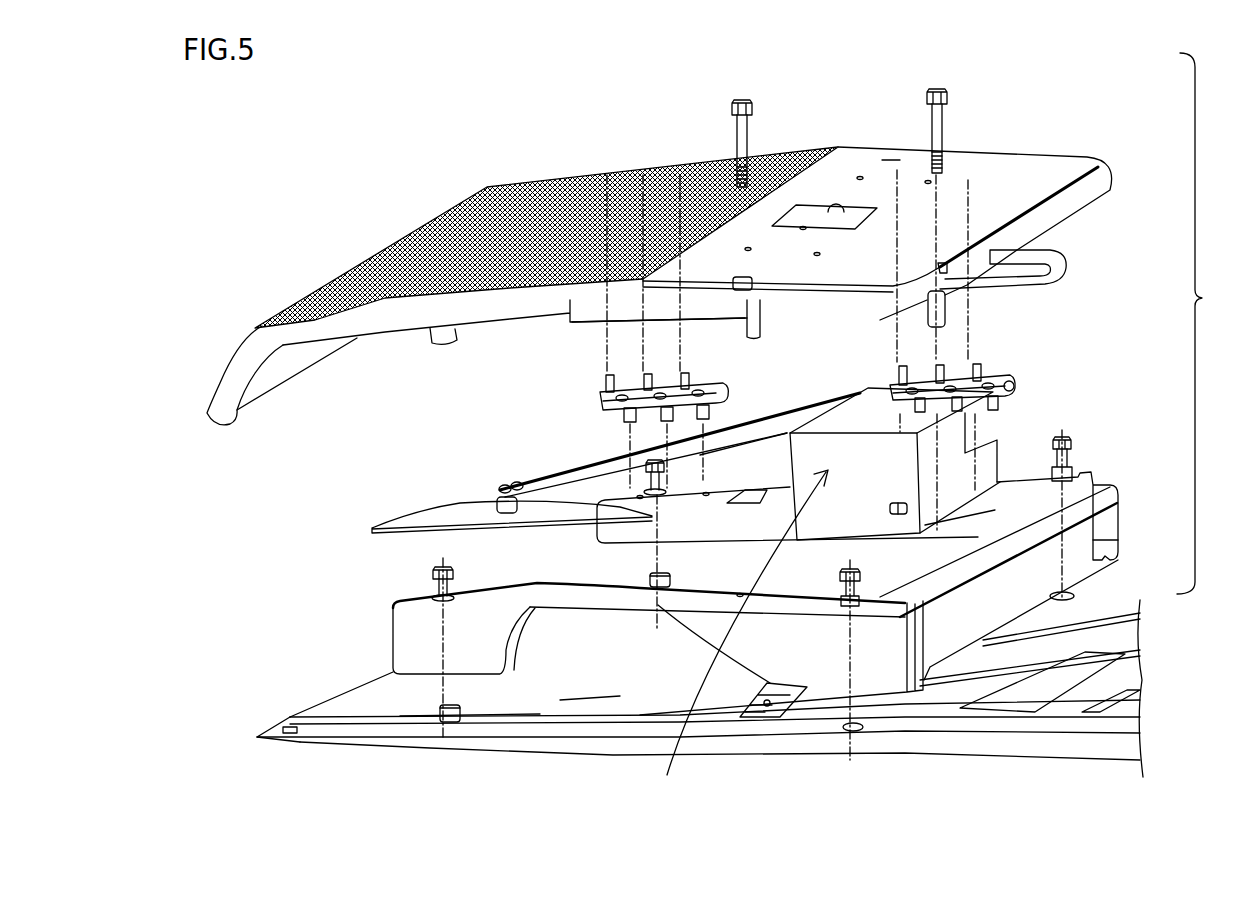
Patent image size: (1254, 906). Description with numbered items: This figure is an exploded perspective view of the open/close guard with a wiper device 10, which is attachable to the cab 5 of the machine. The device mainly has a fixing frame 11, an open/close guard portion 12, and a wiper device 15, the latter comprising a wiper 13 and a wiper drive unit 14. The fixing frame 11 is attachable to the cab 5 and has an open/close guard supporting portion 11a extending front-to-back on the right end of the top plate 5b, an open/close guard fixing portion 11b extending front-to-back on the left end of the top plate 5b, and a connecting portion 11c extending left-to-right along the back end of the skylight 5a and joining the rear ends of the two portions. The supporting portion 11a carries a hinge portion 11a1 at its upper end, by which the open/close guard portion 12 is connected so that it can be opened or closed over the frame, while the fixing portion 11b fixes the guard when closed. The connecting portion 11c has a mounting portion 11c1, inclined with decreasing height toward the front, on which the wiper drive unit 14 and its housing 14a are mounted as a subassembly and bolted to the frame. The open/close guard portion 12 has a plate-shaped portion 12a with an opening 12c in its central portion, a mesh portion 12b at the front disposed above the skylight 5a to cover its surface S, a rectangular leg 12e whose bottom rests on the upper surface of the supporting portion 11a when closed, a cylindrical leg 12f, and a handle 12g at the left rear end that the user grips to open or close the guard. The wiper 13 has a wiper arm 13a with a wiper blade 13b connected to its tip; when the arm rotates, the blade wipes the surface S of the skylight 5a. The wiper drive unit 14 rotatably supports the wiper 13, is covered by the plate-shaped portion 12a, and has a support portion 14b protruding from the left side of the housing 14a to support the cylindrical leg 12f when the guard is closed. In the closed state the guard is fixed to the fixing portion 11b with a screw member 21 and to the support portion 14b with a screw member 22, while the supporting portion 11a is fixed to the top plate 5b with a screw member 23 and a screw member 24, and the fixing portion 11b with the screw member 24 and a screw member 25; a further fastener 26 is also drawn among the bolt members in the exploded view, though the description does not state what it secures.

The cab 5 is at (1092, 663).
The skylight 5a is at (540, 693).
The top plate 5b is at (1003, 695).
The open/close guard with a wiper device 10 is at (1205, 323).
The fixing frame 11 is at (980, 600).
The open/close guard supporting portion 11a is at (1024, 491).
The hinge portion 11a1 is at (698, 384).
The open/close guard fixing portion 11b is at (787, 657).
The connecting portion 11c is at (1023, 590).
The mounting portion 11c1 is at (1010, 545).
The open/close guard portion 12 is at (1012, 173).
The plate-shaped portion 12a is at (897, 160).
The mesh portion 12b is at (582, 192).
The opening 12c is at (840, 205).
The rectangular leg 12e is at (597, 312).
The cylindrical leg 12f is at (948, 312).
The handle 12g is at (1033, 283).
The wiper 13 is at (772, 430).
The wiper arm 13a is at (736, 432).
The wiper blade 13b is at (470, 510).
The wiper drive unit 14 is at (893, 415).
The housing 14a is at (940, 490).
The support portion 14b is at (895, 515).
The wiper device 15 is at (681, 805).
The screw member 21 is at (743, 100).
The screw member 22 is at (937, 89).
The screw member 23 is at (652, 468).
The screw member 24 is at (1066, 436).
The screw member 25 is at (437, 578).
The bolt 26 is at (862, 582).
The surface S is at (602, 678).